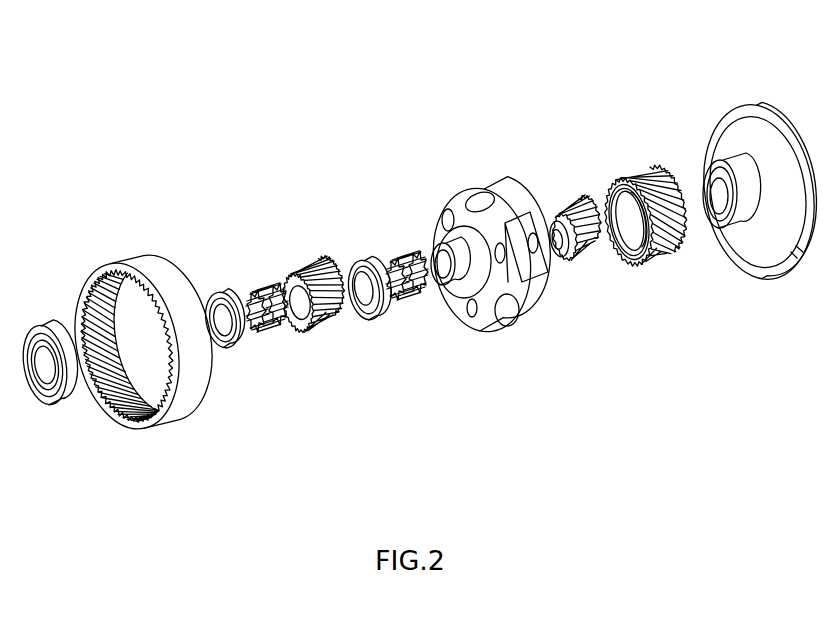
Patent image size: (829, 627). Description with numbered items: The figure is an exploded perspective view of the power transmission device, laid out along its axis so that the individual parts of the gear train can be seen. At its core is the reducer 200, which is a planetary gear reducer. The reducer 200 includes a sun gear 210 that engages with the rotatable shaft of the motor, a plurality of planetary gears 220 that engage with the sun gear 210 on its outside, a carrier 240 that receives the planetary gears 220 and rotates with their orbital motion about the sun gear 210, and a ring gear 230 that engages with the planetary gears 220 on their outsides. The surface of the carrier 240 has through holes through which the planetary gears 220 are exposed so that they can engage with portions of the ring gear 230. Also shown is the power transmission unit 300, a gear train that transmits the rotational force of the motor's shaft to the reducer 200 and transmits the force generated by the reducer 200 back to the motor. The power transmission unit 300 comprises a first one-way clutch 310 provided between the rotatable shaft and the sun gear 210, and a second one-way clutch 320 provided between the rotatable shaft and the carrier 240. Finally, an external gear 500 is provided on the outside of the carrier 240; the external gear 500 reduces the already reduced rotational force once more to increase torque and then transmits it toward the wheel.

The reducer 200 is at (160, 25).
The sun gear 210 is at (318, 265).
The planetary gears 220 is at (575, 208).
The ring gear 230 is at (108, 268).
The carrier 240 is at (472, 193).
The power transmission unit 300 is at (275, 25).
The first one-way clutch 310 is at (260, 295).
The second one-way clutch 320 is at (402, 255).
The external gear 500 is at (637, 185).